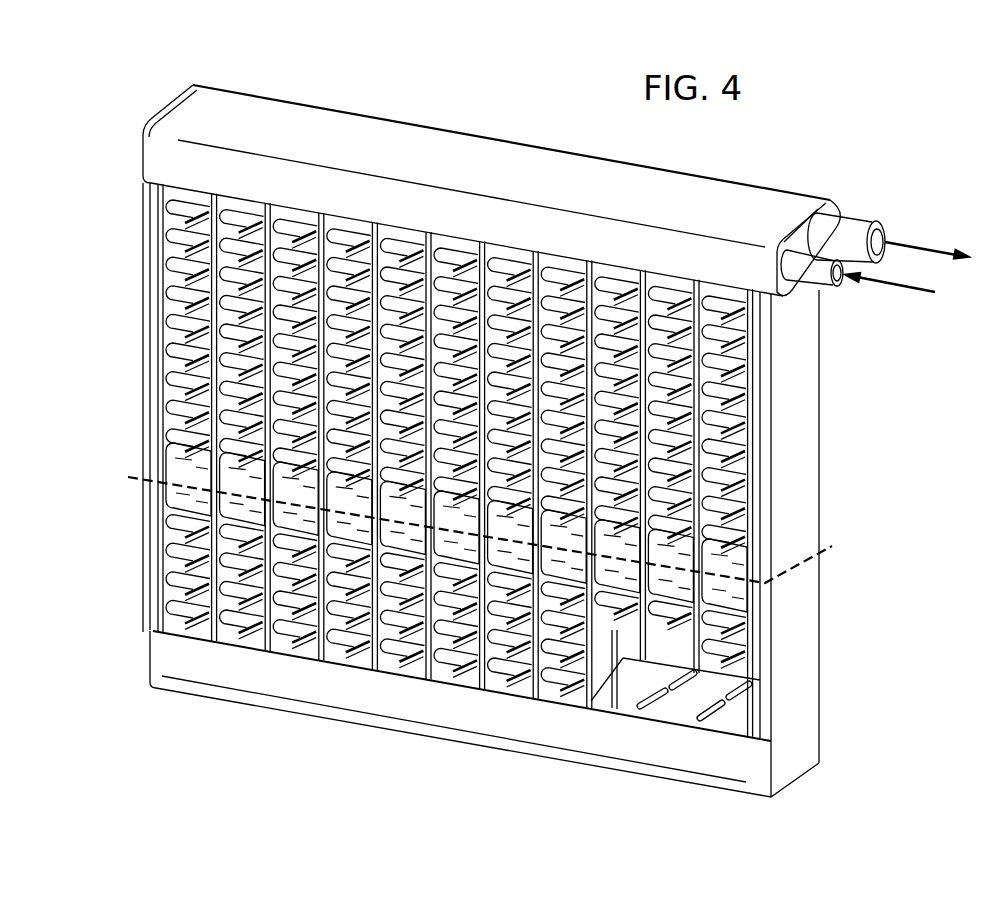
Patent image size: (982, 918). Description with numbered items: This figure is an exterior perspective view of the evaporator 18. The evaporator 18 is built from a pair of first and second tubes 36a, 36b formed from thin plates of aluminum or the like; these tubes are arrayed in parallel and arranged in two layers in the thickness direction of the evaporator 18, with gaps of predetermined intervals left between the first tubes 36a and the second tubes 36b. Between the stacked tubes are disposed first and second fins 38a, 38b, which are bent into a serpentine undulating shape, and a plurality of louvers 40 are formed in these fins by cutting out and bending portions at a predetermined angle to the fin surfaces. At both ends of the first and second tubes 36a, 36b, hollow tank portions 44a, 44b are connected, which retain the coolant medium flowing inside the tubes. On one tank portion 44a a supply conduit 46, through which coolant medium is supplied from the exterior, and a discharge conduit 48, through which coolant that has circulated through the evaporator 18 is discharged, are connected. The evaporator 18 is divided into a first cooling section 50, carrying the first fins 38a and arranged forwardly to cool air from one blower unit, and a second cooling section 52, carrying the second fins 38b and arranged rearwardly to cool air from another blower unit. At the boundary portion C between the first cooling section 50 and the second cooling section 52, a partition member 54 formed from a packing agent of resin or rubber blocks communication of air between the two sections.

The evaporator 18 is at (815, 153).
The first tube 36a is at (625, 664).
The second tube 36b is at (601, 684).
The first fin 38a is at (164, 404).
The second fin 38b is at (166, 598).
The louver 40 is at (184, 381).
The tank portion 44a is at (546, 170).
The tank portion 44b is at (450, 714).
The supply conduit 46 is at (825, 277).
The discharge conduit 48 is at (858, 216).
The first cooling section 50 is at (715, 410).
The second cooling section 52 is at (712, 637).
The partition member 54 is at (738, 594).
The boundary portion C is at (470, 526).